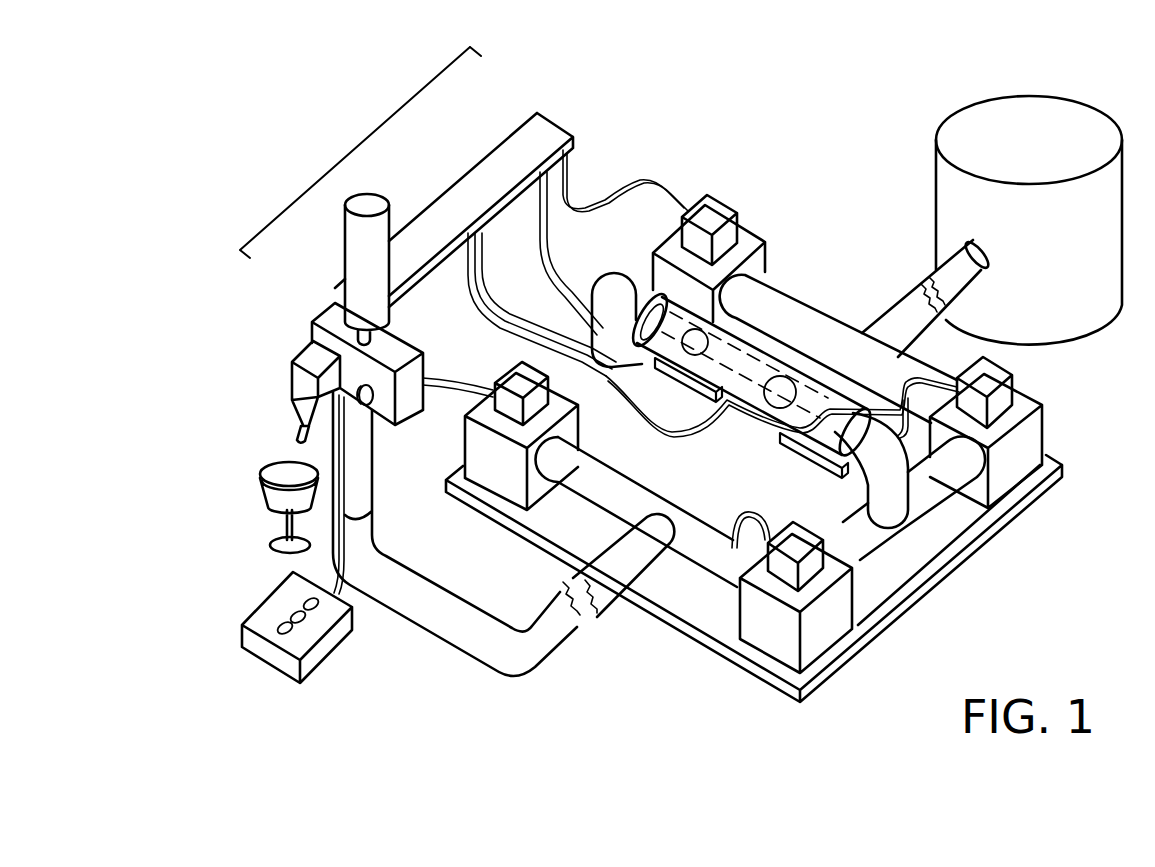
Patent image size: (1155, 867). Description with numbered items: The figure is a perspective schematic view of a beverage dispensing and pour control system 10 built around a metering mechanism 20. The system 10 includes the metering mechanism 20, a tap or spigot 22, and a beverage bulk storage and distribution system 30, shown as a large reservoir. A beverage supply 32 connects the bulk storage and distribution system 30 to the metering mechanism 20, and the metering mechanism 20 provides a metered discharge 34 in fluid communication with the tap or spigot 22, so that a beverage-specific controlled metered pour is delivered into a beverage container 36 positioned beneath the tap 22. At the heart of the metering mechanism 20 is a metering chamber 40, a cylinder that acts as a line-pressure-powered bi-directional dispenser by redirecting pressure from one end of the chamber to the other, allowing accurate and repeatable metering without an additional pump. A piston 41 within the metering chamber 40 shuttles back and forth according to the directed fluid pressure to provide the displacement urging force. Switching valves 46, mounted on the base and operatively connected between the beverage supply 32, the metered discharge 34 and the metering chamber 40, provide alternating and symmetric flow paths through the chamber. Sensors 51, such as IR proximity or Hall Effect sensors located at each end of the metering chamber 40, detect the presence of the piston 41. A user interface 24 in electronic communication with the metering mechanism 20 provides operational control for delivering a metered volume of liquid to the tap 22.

The beverage dispensing and pour control system 10 is at (372, 143).
The metering mechanism 20 is at (629, 639).
The tap or spigot 22 is at (255, 418).
The user interface 24 is at (313, 554).
The beverage bulk storage and distribution system 30 is at (1029, 220).
The beverage supply 32 is at (902, 292).
The metered discharge 34 is at (502, 663).
The beverage container 36 is at (270, 516).
The metering chamber 40 is at (727, 357).
The piston 41 is at (830, 407).
The switching valves 46 is at (727, 207).
The sensors 51 is at (703, 400).